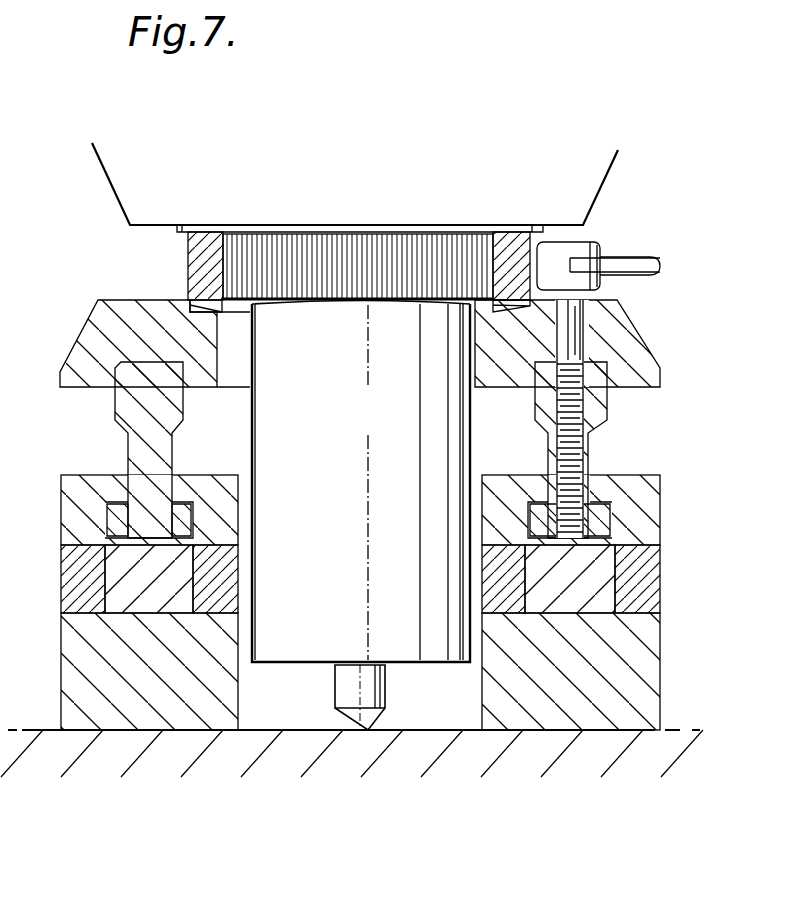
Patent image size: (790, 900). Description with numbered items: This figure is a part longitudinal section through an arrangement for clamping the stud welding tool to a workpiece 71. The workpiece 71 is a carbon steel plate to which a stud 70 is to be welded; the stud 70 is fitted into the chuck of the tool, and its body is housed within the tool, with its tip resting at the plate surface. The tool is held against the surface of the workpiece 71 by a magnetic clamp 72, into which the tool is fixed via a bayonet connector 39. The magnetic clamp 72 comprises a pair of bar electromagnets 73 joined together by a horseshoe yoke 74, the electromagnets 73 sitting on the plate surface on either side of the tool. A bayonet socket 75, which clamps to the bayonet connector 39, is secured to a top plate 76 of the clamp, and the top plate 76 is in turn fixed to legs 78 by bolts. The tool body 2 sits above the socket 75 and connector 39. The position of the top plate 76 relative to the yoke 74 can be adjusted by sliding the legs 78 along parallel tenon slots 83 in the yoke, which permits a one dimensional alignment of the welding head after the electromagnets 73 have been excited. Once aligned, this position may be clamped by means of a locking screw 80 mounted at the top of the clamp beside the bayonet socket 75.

The machine table plate 2 is at (112, 188).
The bayonet connector 39 is at (428, 253).
The bayonet socket 75 is at (222, 264).
The locking screw 80 is at (560, 257).
The top plate 76 is at (632, 342).
The legs 78 is at (135, 442).
The horseshoe yoke 74 is at (95, 485).
The tenon slots 83 is at (133, 533).
The magnetic clamp 72 is at (663, 596).
The bar electromagnets 73 is at (85, 688).
The workpiece 71 is at (303, 745).
The stud 70 is at (372, 698).